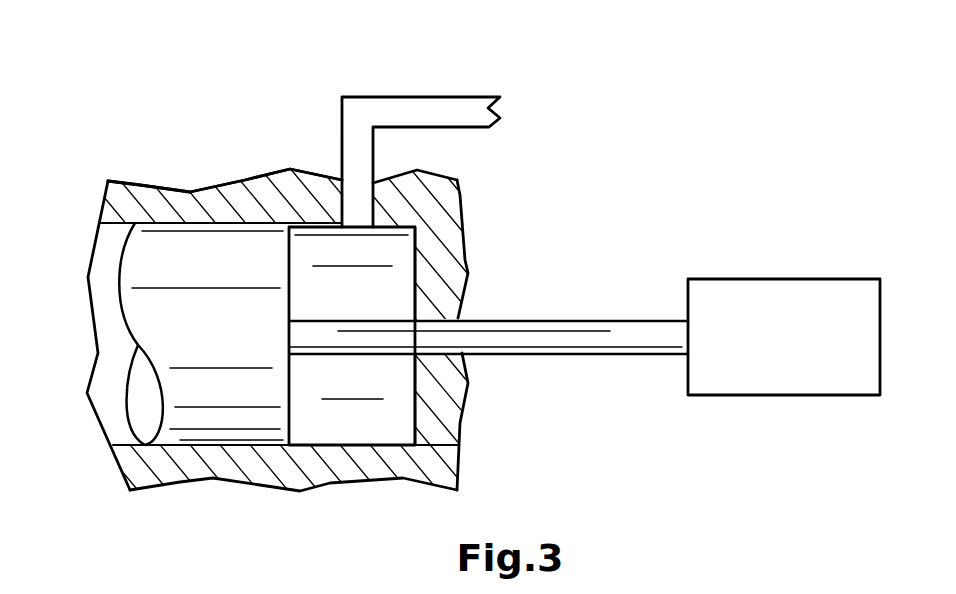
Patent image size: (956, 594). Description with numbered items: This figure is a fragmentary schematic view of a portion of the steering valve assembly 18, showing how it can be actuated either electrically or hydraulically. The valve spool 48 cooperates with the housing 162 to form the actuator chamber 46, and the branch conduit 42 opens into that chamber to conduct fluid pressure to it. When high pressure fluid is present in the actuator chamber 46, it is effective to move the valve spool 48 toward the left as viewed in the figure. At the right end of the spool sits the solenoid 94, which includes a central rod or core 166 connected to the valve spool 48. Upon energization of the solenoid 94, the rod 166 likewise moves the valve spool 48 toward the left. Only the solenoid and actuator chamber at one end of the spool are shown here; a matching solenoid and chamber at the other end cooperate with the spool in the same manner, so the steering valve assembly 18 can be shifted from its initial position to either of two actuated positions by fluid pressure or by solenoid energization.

The steering valve assembly 18 is at (92, 416).
The housing 162 is at (246, 200).
The branch conduit 42 is at (435, 108).
The valve spool 48 is at (197, 328).
The actuator chamber 46 is at (367, 385).
The rod 166 is at (541, 333).
The solenoid 94 is at (786, 328).